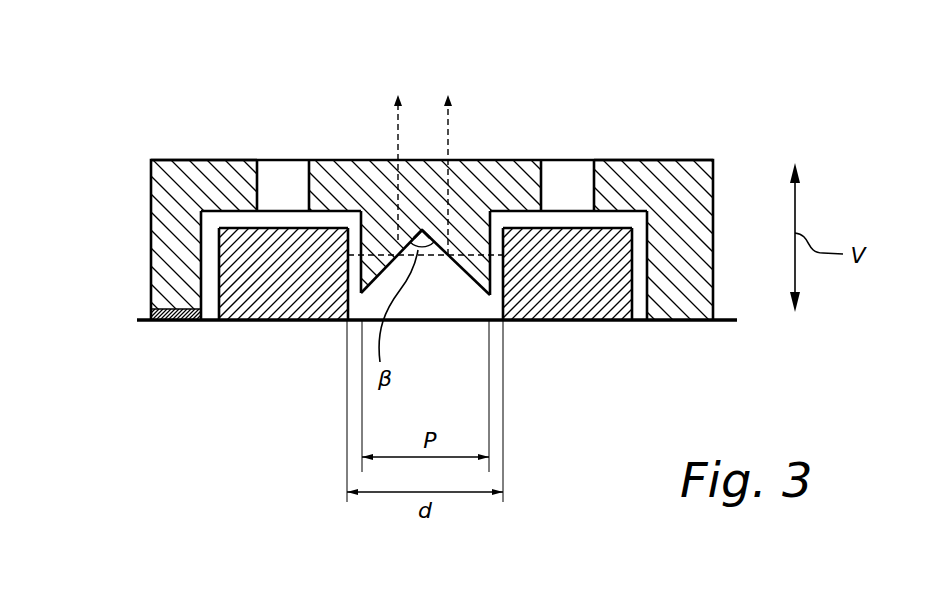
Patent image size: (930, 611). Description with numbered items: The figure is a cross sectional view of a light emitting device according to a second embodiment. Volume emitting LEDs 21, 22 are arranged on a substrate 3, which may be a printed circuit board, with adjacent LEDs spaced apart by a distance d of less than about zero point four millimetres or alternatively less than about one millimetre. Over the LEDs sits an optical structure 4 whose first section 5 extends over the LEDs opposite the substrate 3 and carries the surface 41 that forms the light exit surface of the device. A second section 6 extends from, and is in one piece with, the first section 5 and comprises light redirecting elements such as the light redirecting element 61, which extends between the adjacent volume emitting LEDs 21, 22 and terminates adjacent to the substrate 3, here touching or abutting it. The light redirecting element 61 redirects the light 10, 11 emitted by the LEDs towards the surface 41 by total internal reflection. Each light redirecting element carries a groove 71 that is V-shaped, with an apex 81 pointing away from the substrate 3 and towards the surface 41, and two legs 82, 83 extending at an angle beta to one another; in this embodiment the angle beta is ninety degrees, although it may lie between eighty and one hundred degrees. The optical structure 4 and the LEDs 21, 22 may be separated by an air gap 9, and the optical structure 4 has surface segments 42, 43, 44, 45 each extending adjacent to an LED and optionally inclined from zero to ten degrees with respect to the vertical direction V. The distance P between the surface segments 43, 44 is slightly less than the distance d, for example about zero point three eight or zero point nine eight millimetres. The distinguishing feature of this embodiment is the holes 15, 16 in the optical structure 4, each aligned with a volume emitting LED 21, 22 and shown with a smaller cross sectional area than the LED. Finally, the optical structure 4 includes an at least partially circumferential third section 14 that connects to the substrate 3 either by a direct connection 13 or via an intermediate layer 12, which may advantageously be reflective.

The substrate 3 is at (163, 364).
The optical structure 4 is at (214, 161).
The first section 5 is at (435, 163).
The second section 6 is at (470, 238).
The air gap 9 is at (310, 221).
The light 10 is at (396, 127).
The light 11 is at (452, 135).
The intermediate layer 12 is at (170, 312).
The direct connection 13 is at (683, 313).
The third section 14 is at (178, 257).
The hole 15 is at (278, 188).
The hole 16 is at (563, 185).
The volume emitting LED 21 is at (267, 293).
The volume emitting LED 22 is at (588, 302).
The surface 41 is at (693, 162).
The surface segment 42 is at (203, 264).
The surface segment 43 is at (358, 263).
The surface segment 44 is at (490, 263).
The surface segment 45 is at (647, 259).
The light redirecting element 61 is at (380, 238).
The groove 71 is at (432, 280).
The apex 81 is at (422, 227).
The leg 82 is at (377, 284).
The leg 83 is at (473, 283).